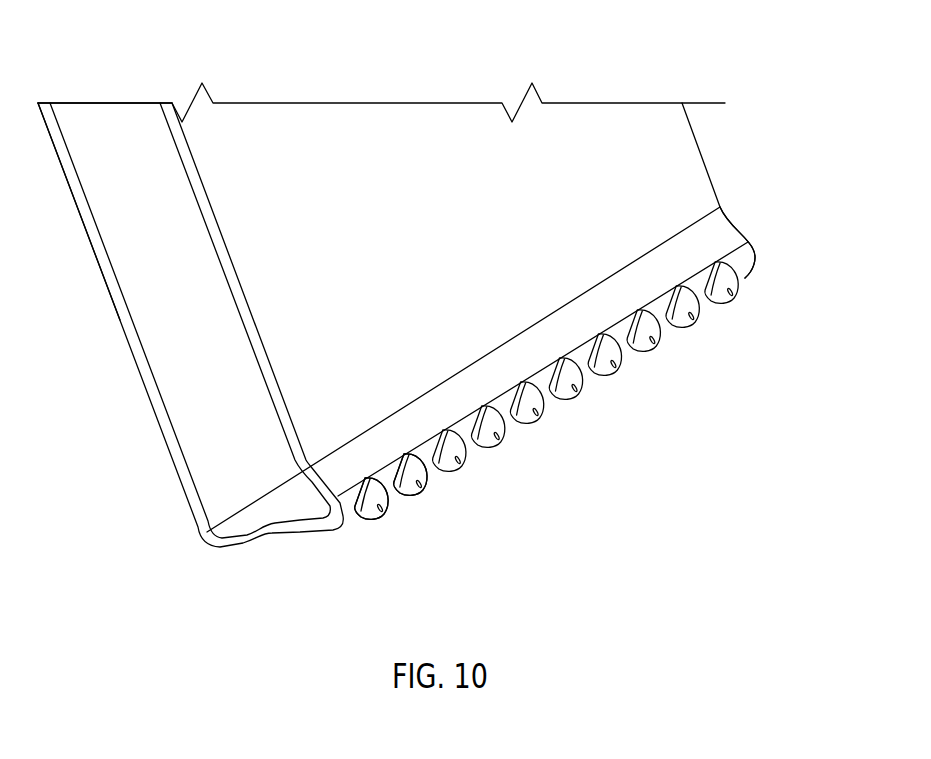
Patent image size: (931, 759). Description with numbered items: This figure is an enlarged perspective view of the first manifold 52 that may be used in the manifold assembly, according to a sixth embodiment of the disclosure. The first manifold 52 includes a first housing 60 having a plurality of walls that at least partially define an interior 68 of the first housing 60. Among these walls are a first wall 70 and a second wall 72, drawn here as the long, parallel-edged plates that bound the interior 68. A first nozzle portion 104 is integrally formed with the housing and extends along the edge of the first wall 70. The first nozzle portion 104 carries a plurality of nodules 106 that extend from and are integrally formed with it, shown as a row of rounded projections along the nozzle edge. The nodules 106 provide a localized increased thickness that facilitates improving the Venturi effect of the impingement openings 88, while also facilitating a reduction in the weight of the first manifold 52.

The first manifold 52 is at (746, 41).
The first housing 60 is at (722, 126).
The interior 68 is at (173, 267).
The first wall 70 is at (682, 170).
The second wall 72 is at (115, 305).
The impingement openings 88 is at (388, 510).
The first nozzle portion 104 is at (760, 231).
The nodules 106 is at (432, 476).